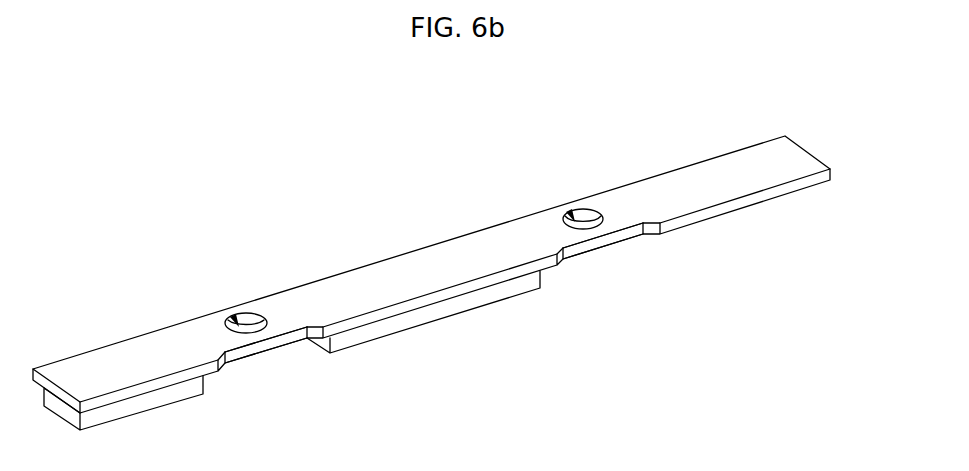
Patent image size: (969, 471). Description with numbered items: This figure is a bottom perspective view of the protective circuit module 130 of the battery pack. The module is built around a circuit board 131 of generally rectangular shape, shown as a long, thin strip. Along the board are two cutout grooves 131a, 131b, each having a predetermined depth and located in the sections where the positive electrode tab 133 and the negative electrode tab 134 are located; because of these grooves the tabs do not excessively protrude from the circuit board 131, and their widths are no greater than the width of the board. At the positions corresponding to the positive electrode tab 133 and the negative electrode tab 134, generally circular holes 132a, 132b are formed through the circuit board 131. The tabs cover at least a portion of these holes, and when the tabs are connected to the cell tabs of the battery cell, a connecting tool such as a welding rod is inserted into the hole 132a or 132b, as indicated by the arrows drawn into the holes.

The protective circuit module 130 is at (838, 119).
The circuit board 131 is at (718, 167).
The cutout groove 131a is at (259, 348).
The cutout groove 131b is at (604, 244).
The hole 132a is at (252, 320).
The hole 132b is at (587, 212).
The positive electrode tab 133 is at (231, 313).
The negative electrode tab 134 is at (567, 208).